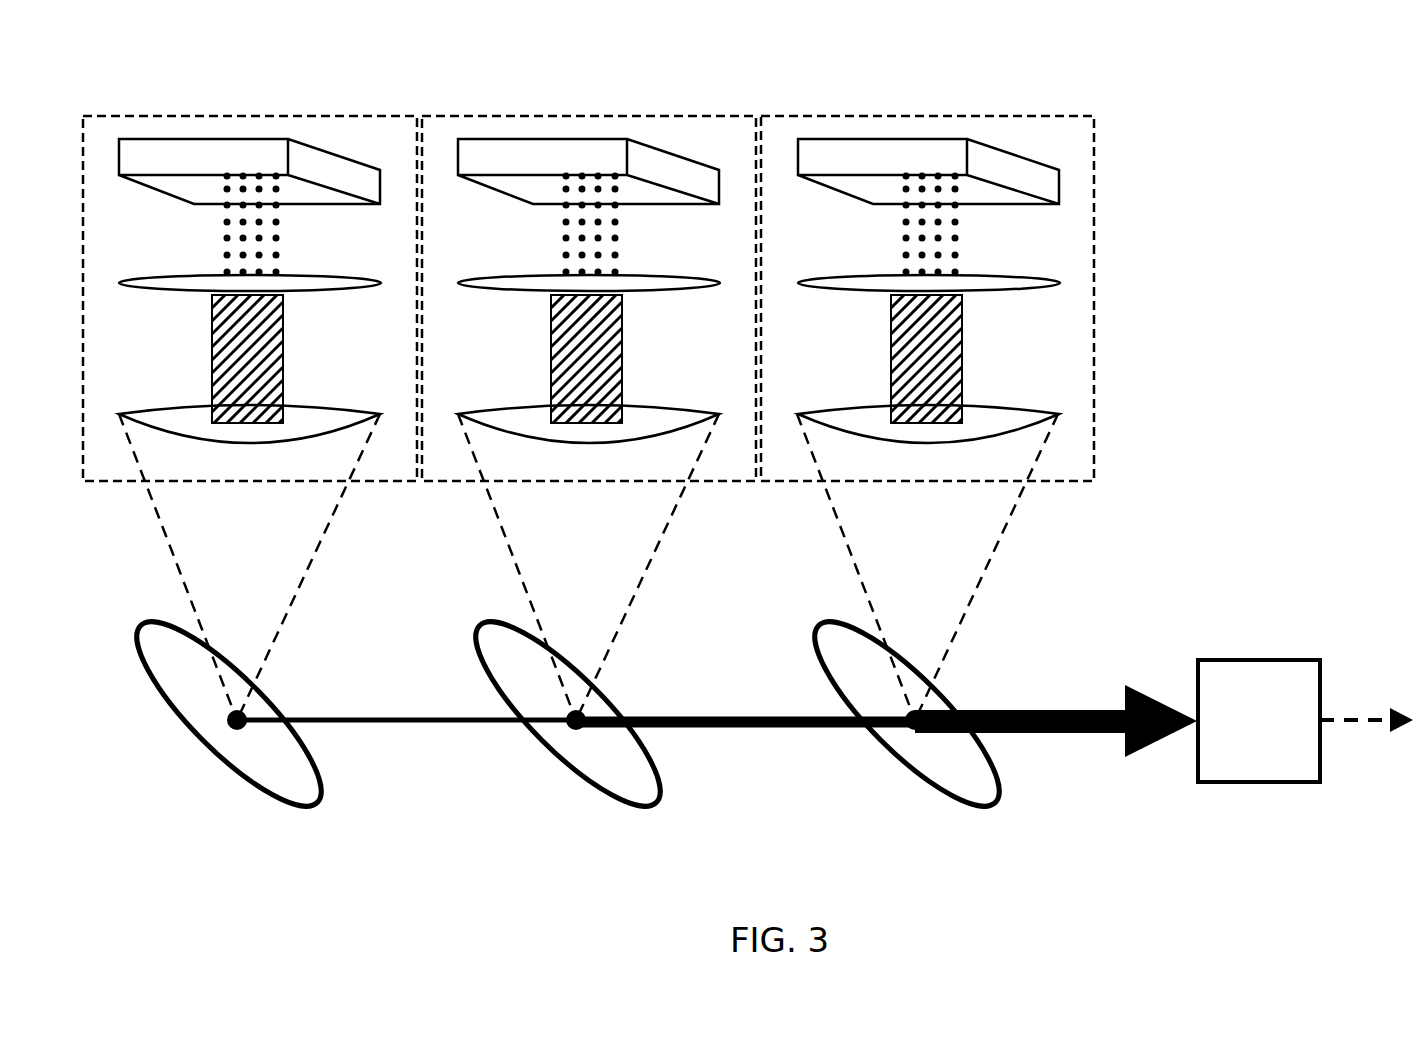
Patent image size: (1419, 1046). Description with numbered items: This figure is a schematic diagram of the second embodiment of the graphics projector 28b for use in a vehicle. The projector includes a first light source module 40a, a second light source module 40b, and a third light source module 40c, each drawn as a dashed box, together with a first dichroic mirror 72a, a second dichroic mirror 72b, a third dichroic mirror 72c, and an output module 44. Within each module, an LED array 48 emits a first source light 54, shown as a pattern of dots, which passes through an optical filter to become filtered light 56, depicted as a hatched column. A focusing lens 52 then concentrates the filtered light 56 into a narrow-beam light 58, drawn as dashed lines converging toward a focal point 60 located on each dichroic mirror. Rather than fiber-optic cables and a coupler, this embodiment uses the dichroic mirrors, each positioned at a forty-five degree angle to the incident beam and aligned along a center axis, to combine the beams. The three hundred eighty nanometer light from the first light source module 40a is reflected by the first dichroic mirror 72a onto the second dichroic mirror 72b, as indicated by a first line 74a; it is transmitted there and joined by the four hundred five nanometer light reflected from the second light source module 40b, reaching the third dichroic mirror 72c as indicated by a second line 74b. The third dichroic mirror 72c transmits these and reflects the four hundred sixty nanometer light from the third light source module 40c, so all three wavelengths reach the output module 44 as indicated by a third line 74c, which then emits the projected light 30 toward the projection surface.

The second embodiment of the graphics projector 28b is at (1192, 108).
The first light source module 40a is at (255, 100).
The second light source module 40b is at (594, 100).
The third light source module 40c is at (934, 100).
The light-emitting diode (LED) array 48 is at (601, 193).
The first source light 54 is at (556, 224).
The projected light 30 is at (1378, 722).
The filtered light 56 is at (585, 359).
The focusing lens 52 is at (577, 406).
The narrow-beam light 58 is at (588, 567).
The first dichroic mirror 72a is at (152, 647).
The second dichroic mirror 72b is at (492, 642).
The third dichroic mirror 72c is at (832, 645).
The focal point 60 is at (237, 730).
The first line 74a is at (403, 723).
The second line 74b is at (758, 728).
The third line 74c is at (1080, 735).
The output module 44 is at (1245, 733).